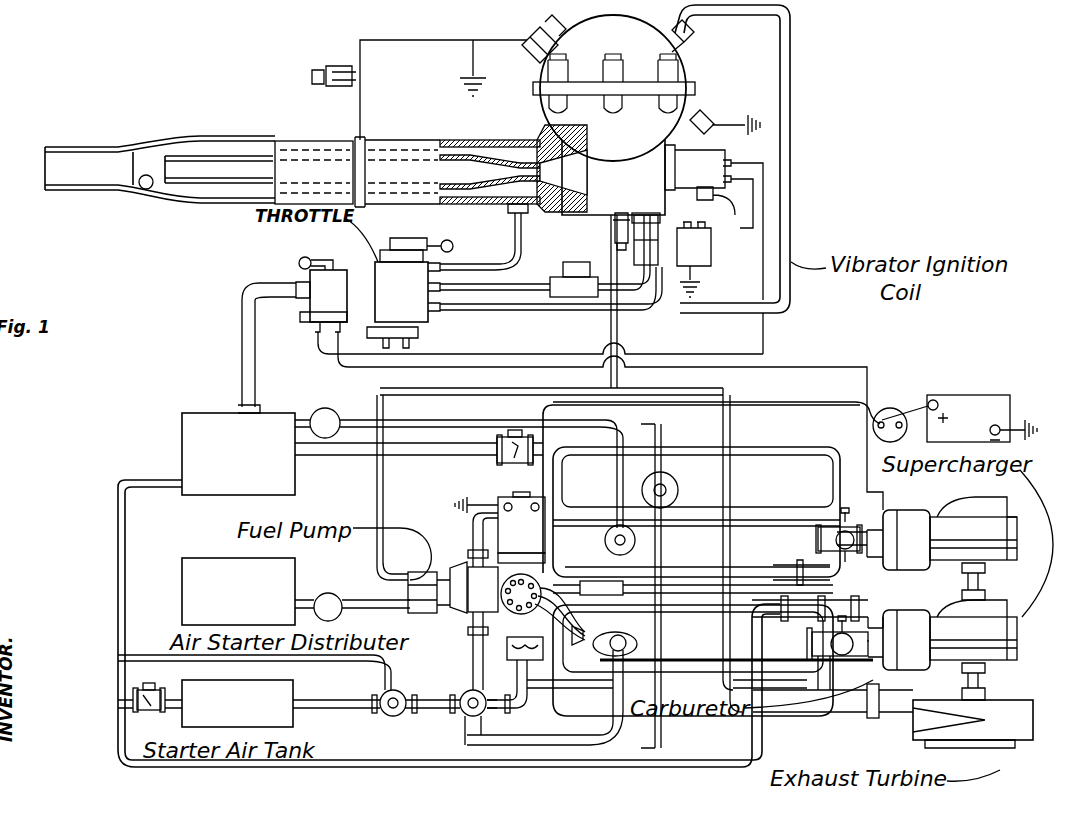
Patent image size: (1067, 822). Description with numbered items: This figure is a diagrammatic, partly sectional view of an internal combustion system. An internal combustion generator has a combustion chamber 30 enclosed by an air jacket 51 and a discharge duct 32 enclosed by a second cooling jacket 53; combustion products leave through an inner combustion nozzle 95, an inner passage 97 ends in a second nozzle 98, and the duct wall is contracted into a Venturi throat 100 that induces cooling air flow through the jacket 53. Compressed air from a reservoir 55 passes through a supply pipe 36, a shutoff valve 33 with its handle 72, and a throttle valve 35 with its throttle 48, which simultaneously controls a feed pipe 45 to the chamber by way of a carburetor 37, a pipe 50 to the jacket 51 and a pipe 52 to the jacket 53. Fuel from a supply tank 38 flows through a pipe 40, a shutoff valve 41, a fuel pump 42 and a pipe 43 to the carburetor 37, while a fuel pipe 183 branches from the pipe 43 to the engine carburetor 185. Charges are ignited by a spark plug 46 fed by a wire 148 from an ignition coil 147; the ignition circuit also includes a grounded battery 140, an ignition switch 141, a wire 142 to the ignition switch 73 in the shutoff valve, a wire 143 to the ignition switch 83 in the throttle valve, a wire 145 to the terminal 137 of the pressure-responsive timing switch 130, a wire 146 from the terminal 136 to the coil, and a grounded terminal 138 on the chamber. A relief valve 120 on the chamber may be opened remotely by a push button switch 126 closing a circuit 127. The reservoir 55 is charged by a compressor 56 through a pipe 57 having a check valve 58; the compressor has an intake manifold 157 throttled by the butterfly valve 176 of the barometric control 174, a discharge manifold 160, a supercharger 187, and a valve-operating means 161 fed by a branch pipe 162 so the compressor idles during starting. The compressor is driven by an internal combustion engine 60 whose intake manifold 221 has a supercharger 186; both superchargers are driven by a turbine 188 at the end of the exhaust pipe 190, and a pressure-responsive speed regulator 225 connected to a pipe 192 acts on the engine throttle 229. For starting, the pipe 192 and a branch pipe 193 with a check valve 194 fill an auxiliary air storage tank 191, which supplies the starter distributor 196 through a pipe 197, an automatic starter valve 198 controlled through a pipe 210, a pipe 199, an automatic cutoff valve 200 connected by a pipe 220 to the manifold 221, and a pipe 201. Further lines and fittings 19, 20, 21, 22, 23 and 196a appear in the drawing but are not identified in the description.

The second nozzle 98 is at (178, 152).
The Venturi throat 100 is at (143, 190).
The discharge duct 32 is at (314, 140).
The jacket 53 is at (394, 140).
The inner passage 97 is at (462, 140).
The inner combustion nozzle 95 is at (592, 166).
The combustion chamber 30 is at (697, 82).
The air jacket 51 is at (688, 40).
The terminal 138 is at (700, 117).
The relief valve 120 is at (540, 30).
The circuit 127 is at (455, 40).
The push button switch 126 is at (340, 67).
The pressure-responsive timing switch 130 is at (733, 160).
The terminal 137 is at (778, 176).
The wire 146 is at (790, 210).
The pipe 50 is at (792, 238).
The terminal 136 is at (750, 200).
The ignition coil 147 is at (706, 274).
The wire 145 is at (765, 333).
The throttle valve 35 is at (435, 324).
The throttle 48 is at (408, 238).
The ignition switch 83 is at (412, 343).
The pipe 52 is at (462, 265).
The feed pipe 45 is at (520, 312).
The carburetor 37 is at (559, 267).
The wire 148 is at (634, 258).
The spark plug 46 is at (614, 238).
The pipe 43 is at (620, 332).
The shutoff valve 33 is at (297, 275).
The handle 72 is at (303, 257).
The ignition switch 73 is at (298, 318).
The wire 143 is at (358, 366).
The wire 142 is at (818, 368).
The supply pipe 36 is at (240, 330).
The compressed air reservoir 55 is at (181, 430).
The pipe 57 is at (395, 457).
The check valve 58 is at (520, 463).
The compressor 56 is at (808, 442).
The discharge manifold 160 is at (733, 442).
The fuel pipe 183 is at (730, 390).
The valve-operating means 161 is at (675, 480).
The intake manifold 157 is at (645, 545).
The pipe 19 is at (654, 588).
The intake manifold 221 is at (718, 665).
The ignition switch 141 is at (888, 408).
The battery 140 is at (970, 396).
The butterfly valve 176 is at (870, 513).
The supercharger 187 is at (983, 565).
The supercharger 186 is at (985, 665).
The barometric control device 174 is at (846, 527).
The pipe 21 is at (812, 555).
The pressure-responsive speed regulator 225 is at (819, 623).
The pipe 20 is at (747, 620).
The engine carburetor 185 is at (840, 660).
The throttle 229 is at (872, 660).
The internal combustion engine 60 is at (765, 713).
The engine exhaust pipe 190 is at (828, 713).
The turbine 188 is at (975, 745).
The branch pipe 162 is at (558, 690).
The pipe 220 is at (545, 745).
The pipe 192 is at (118, 562).
The supply tank 38 is at (203, 557).
The shutoff valve 41 is at (312, 594).
The pipe 40 is at (386, 600).
The fuel pump 42 is at (433, 570).
The pipe 199 is at (472, 695).
The starter distributor 196 is at (507, 647).
The connector 196a is at (517, 668).
The pipe 201 is at (530, 705).
The pipe 210 is at (178, 662).
The pipe 197 is at (340, 690).
The automatic starter valve 198 is at (392, 716).
The flange 23 is at (372, 712).
The flange 22 is at (451, 713).
The automatic cutoff valve 200 is at (466, 750).
The auxiliary air storage tank 191 is at (285, 680).
The check valve 194 is at (135, 695).
The branch pipe 193 is at (175, 712).